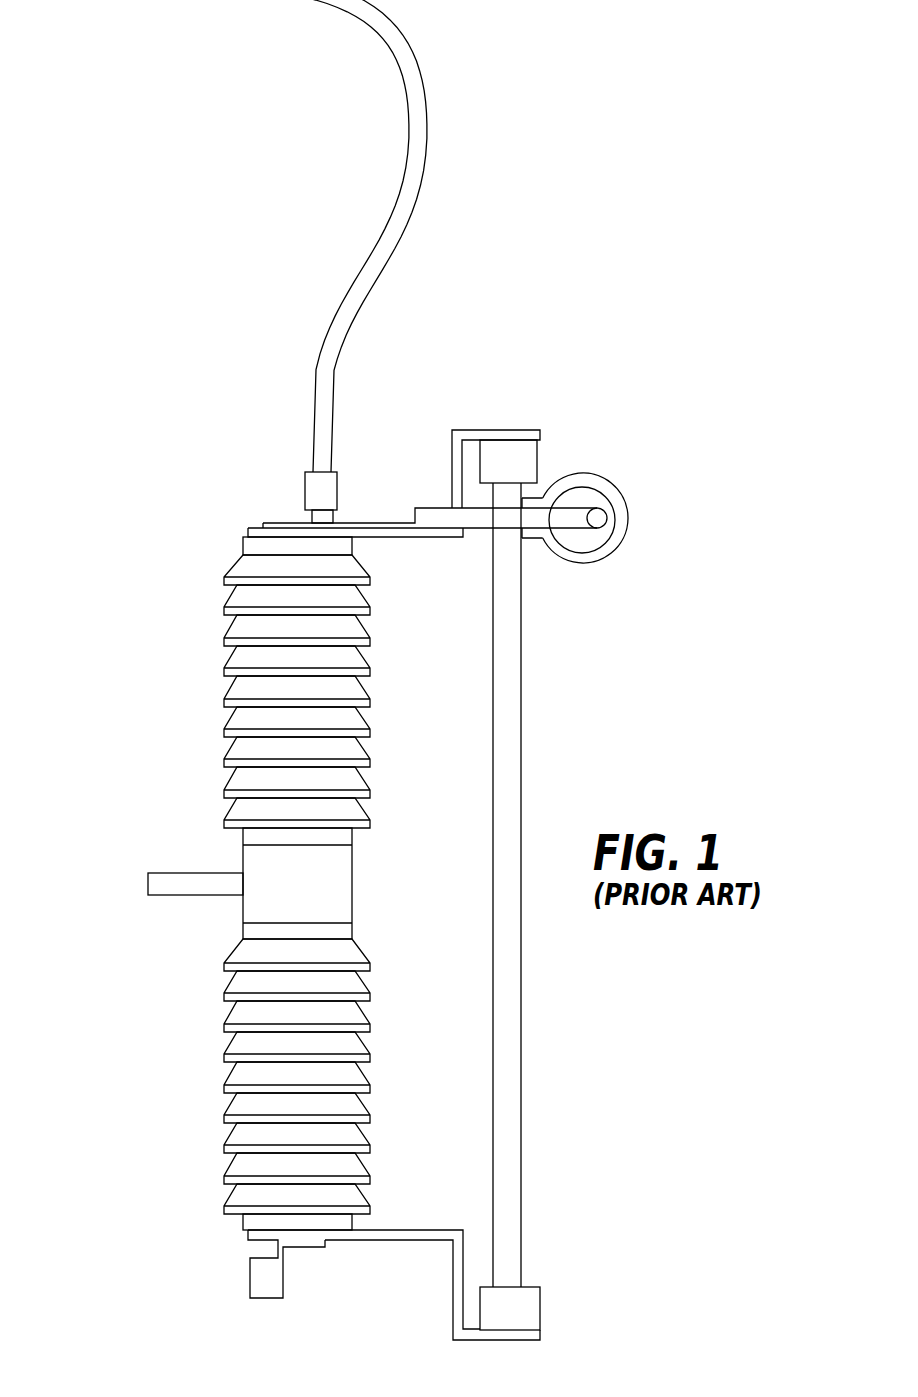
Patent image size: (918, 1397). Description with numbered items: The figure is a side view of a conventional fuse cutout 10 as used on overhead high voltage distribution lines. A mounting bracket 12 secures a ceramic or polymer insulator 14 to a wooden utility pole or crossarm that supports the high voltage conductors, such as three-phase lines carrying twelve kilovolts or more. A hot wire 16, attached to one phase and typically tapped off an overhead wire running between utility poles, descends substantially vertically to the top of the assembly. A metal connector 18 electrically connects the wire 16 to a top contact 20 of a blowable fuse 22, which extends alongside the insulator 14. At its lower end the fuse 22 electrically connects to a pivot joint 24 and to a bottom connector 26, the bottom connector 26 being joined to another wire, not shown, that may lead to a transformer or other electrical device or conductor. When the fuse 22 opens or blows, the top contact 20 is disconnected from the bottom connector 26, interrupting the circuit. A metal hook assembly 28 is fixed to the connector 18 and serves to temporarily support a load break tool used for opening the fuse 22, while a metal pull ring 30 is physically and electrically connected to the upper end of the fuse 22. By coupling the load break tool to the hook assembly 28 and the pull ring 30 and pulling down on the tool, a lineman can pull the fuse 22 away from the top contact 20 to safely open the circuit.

The fuse cutout 10 is at (120, 494).
The mounting bracket 12 is at (217, 897).
The insulator 14 is at (235, 563).
The hot wire 16 is at (424, 167).
The metal connector 18 is at (337, 493).
The top contact 20 is at (493, 430).
The fuse 22 is at (522, 687).
The pivot joint 24 is at (540, 1300).
The bottom connector 26 is at (283, 1275).
The hook assembly 28 is at (578, 517).
The pull ring 30 is at (627, 522).